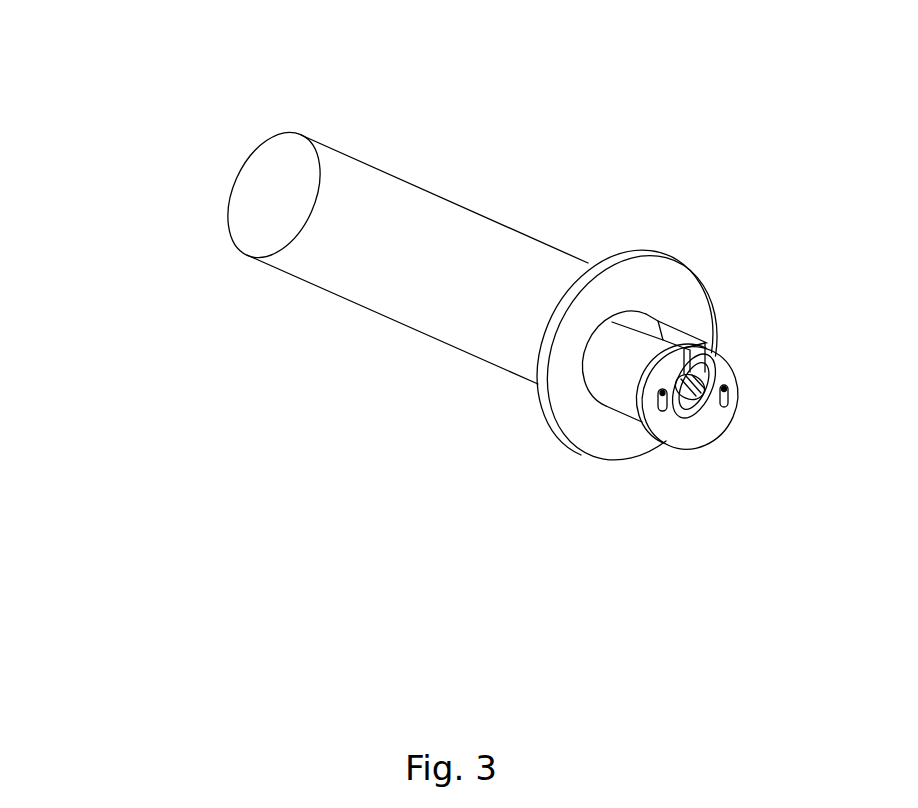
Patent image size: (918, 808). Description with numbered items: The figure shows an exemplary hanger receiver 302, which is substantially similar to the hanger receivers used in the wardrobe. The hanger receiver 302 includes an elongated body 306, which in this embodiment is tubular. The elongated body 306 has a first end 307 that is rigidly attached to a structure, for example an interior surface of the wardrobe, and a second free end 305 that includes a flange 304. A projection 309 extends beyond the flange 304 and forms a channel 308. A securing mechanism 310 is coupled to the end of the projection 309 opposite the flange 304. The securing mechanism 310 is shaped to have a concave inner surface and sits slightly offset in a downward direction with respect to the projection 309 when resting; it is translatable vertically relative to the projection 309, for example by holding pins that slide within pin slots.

The hanger receiver 302 is at (191, 197).
The flange 304 is at (657, 238).
The second free end 305 is at (583, 504).
The elongated body 306 is at (466, 188).
The first end 307 is at (226, 337).
The channel 308 is at (676, 336).
The projection 309 is at (615, 393).
The securing mechanism 310 is at (717, 420).